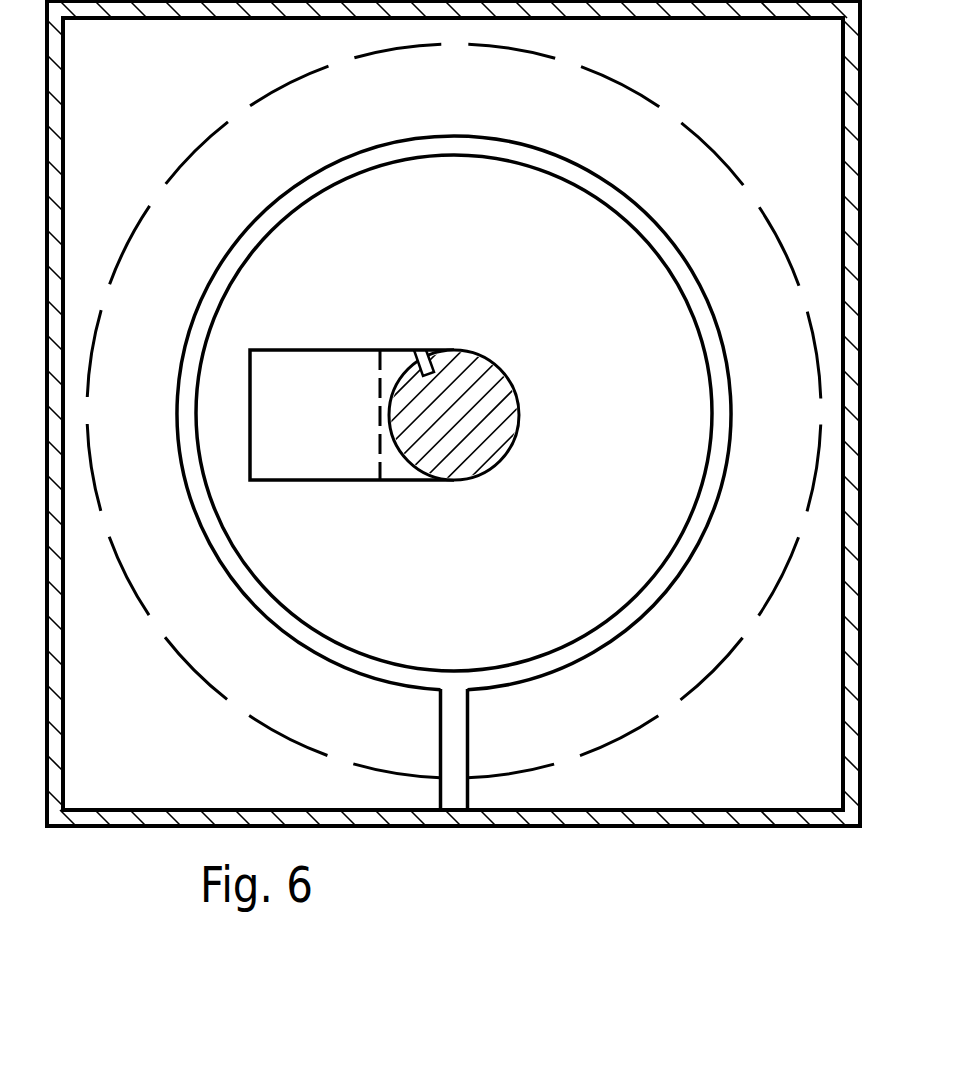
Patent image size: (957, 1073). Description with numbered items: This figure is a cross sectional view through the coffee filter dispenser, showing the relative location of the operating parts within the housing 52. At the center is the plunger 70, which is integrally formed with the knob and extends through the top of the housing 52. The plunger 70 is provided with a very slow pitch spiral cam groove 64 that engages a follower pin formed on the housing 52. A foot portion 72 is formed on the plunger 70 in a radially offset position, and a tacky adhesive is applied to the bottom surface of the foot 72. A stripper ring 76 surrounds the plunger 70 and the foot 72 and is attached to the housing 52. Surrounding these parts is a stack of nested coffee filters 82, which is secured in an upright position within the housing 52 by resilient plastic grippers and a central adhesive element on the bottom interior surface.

The housing 52 is at (702, 827).
The stack of nested coffee filters 82 is at (675, 122).
The stripper ring 76 is at (665, 562).
The foot portion 72 is at (287, 465).
The plunger 70 is at (498, 365).
The spiral cam groove 64 is at (415, 352).